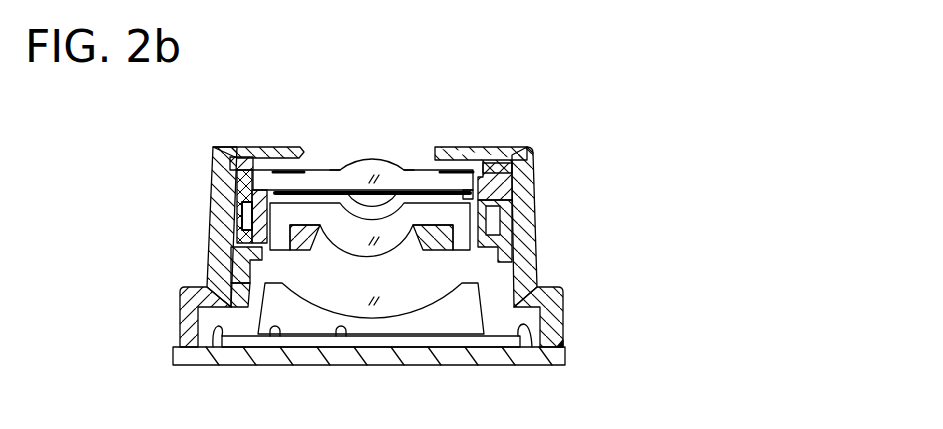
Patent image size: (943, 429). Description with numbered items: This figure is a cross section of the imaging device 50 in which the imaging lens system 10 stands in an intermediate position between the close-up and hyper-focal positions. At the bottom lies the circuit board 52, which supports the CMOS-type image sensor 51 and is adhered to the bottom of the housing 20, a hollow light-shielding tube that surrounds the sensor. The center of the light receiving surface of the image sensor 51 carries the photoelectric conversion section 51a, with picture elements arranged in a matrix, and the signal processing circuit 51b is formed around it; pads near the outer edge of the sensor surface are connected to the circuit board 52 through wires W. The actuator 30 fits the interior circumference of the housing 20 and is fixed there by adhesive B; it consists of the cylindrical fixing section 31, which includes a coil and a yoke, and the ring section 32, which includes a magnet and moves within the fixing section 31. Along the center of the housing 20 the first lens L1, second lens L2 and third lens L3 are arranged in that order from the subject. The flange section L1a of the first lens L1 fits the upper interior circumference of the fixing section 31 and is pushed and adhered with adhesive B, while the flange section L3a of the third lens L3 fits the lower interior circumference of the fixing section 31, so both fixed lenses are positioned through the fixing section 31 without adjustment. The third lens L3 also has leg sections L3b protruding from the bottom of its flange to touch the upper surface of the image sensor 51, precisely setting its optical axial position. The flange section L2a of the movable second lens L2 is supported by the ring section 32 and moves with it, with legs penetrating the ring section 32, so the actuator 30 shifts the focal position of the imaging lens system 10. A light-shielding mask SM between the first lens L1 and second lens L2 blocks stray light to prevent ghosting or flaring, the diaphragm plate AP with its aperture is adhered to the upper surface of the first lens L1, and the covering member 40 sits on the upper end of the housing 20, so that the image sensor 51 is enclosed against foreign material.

The imaging lens system 10 is at (322, 132).
The covering member 40 is at (292, 146).
The light-shielding mask SM is at (346, 157).
The first lens L1 is at (383, 157).
The diaphragm plate AP is at (410, 158).
The flange section L1a is at (463, 193).
The imaging device 50 is at (545, 150).
The adhesive B is at (513, 172).
The fixing section 31 is at (503, 205).
The actuator 30 is at (517, 230).
The ring section 32 is at (512, 258).
The housing 20 is at (566, 288).
The wires W is at (192, 332).
The flange section L2a is at (232, 243).
The flange section L3a is at (243, 287).
The leg sections L3b is at (247, 322).
The second lens L2 is at (397, 238).
The signal processing circuit 51b is at (274, 334).
The photoelectric conversion section 51a is at (339, 334).
The third lens L3 is at (395, 300).
The image sensor 51 is at (463, 340).
The circuit board 52 is at (531, 347).